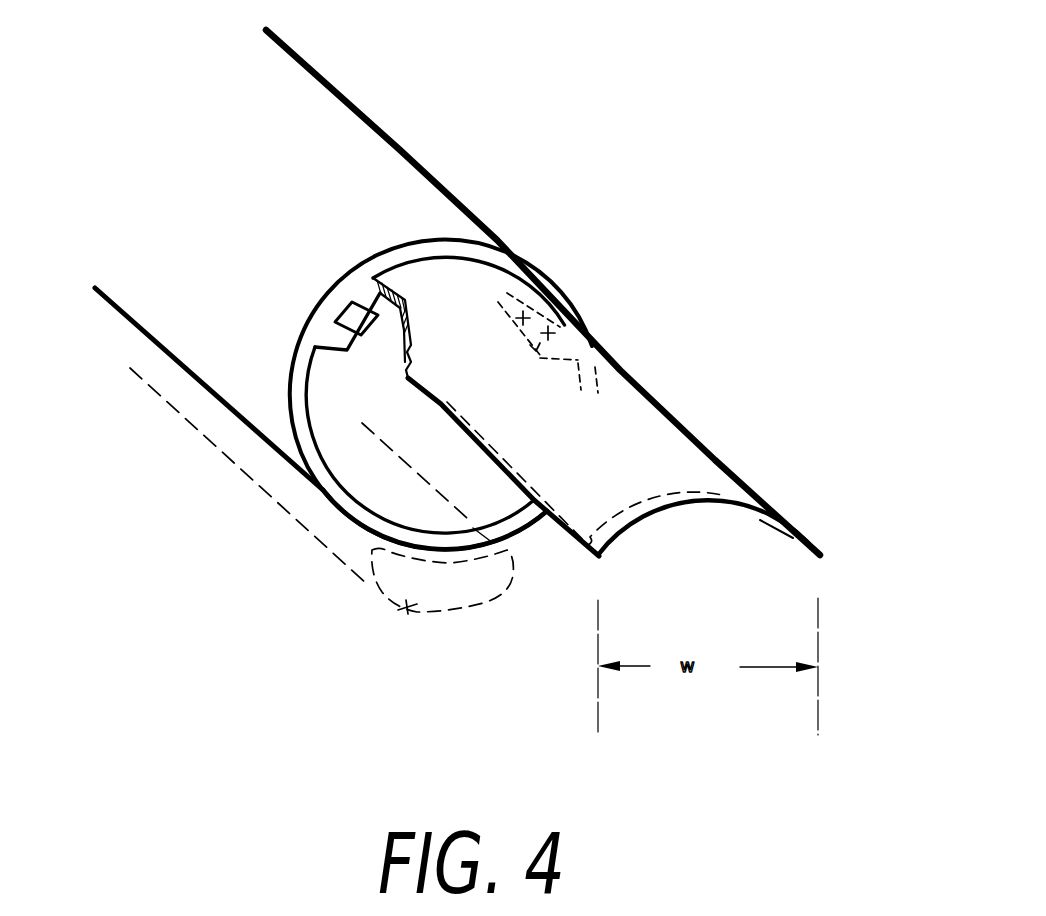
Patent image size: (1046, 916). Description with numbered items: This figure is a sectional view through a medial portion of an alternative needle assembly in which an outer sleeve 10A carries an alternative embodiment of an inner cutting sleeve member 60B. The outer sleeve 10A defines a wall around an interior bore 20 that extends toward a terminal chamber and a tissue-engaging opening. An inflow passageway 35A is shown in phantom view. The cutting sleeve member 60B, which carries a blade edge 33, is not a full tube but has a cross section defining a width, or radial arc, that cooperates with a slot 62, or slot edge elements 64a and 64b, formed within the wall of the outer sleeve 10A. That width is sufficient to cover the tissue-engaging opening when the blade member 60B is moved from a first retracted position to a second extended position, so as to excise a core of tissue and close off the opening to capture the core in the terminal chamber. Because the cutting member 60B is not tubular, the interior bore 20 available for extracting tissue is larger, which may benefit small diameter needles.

The outer sleeve 10A is at (360, 97).
The interior bore 20 is at (350, 385).
The slot 62 is at (353, 303).
The slot edge element 64a is at (340, 332).
The slot edge element 64b is at (563, 326).
The cutting sleeve member 60B is at (663, 410).
The blade edge 33 is at (820, 556).
The inflow passageway 35A is at (394, 607).